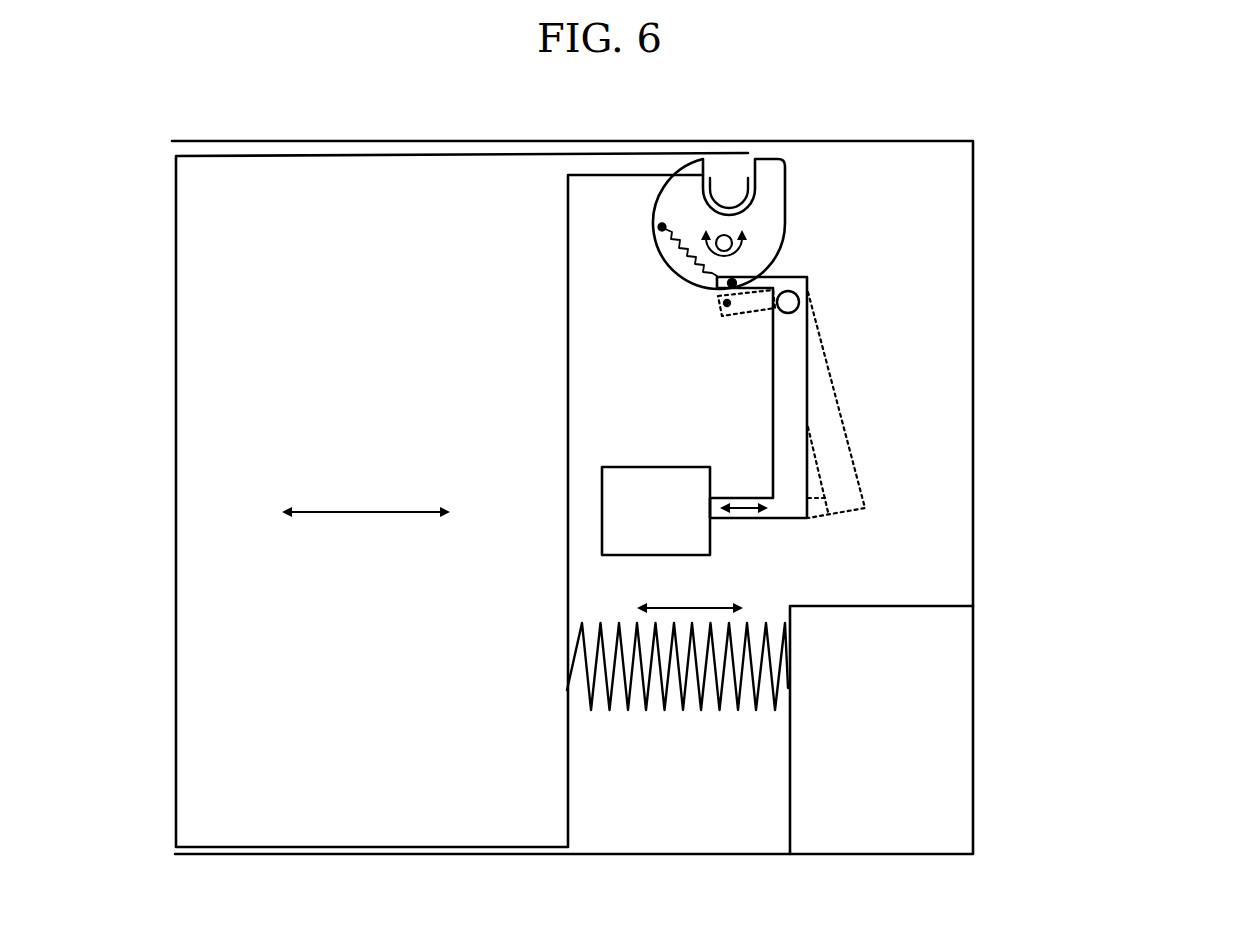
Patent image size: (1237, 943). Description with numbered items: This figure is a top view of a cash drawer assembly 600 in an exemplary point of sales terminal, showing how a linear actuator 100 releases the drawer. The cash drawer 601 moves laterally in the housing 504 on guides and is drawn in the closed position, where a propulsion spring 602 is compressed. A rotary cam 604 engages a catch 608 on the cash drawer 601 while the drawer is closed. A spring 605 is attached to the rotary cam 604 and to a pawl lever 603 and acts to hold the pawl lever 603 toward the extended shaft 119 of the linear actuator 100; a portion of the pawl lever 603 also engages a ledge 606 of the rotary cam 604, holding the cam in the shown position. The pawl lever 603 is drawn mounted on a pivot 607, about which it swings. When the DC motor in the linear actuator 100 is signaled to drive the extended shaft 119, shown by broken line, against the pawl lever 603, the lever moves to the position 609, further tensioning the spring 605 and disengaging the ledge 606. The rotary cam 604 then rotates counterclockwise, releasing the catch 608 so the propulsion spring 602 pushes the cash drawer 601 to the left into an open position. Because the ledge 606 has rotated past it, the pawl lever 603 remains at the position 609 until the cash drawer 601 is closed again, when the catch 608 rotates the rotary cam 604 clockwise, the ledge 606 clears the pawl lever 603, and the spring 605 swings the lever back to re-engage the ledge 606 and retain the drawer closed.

The cash drawer assembly 600 is at (1092, 190).
The cash drawer 601 is at (357, 180).
The propulsion spring 602 is at (697, 712).
The pawl lever 603 is at (793, 450).
The rotary cam 604 is at (787, 187).
The spring 605 is at (683, 198).
The ledge 606 is at (728, 288).
The pivot pin 607 is at (795, 297).
The catch 608 is at (728, 177).
The position 609 is at (825, 407).
The linear actuator 100 is at (687, 538).
The extended shaft 119 is at (745, 498).
The housing 504 is at (975, 756).